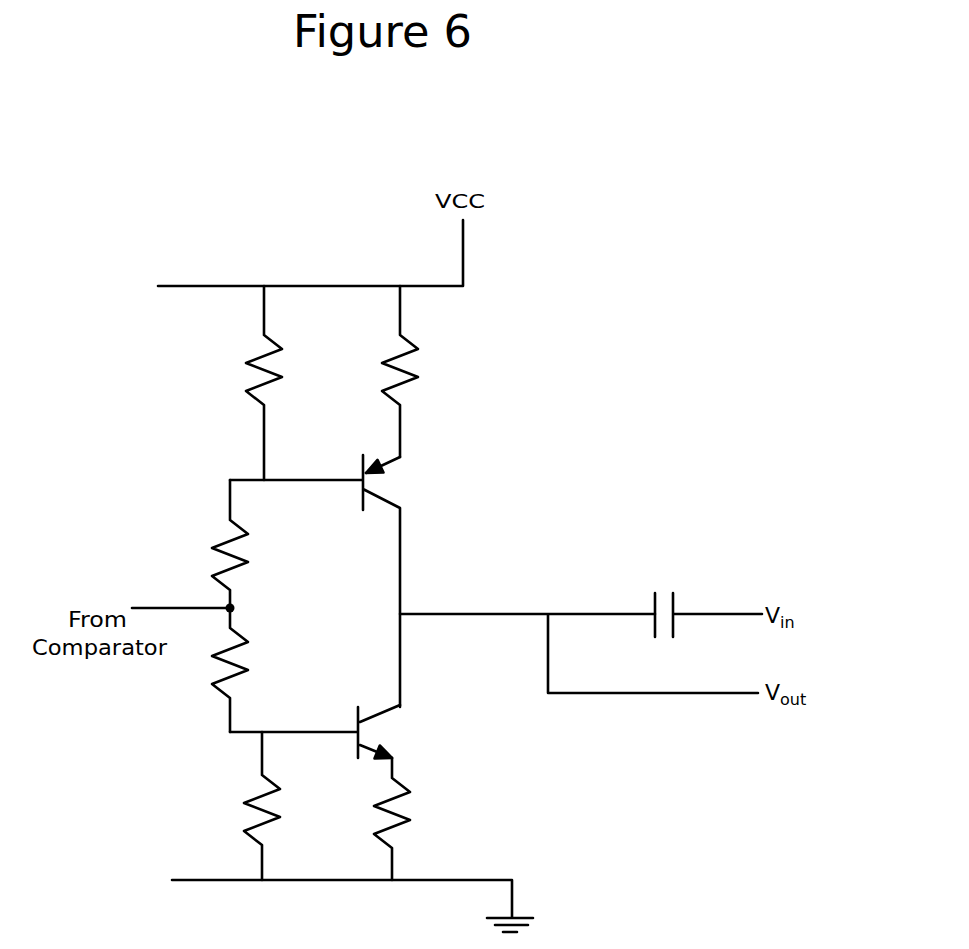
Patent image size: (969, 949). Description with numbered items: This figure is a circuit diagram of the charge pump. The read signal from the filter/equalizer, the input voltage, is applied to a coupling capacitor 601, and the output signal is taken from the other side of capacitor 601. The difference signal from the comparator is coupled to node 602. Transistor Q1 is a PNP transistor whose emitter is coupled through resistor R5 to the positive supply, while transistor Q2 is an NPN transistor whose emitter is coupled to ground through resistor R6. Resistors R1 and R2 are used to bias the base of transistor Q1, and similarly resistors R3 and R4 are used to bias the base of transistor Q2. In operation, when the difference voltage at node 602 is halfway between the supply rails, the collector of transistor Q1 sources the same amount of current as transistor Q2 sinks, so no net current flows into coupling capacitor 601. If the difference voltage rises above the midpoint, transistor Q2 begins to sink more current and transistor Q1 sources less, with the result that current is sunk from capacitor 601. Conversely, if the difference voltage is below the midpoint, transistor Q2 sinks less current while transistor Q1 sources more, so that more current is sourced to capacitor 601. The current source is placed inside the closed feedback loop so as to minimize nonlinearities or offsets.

The capacitor 601 is at (675, 602).
The node 602 is at (236, 609).
The resistor R1 is at (280, 383).
The resistor R2 is at (245, 544).
The resistor R3 is at (245, 670).
The resistor R4 is at (277, 806).
The resistor R5 is at (418, 371).
The resistor R6 is at (408, 819).
The PNP transistor Q1 is at (340, 581).
The NPN transistor Q2 is at (334, 732).